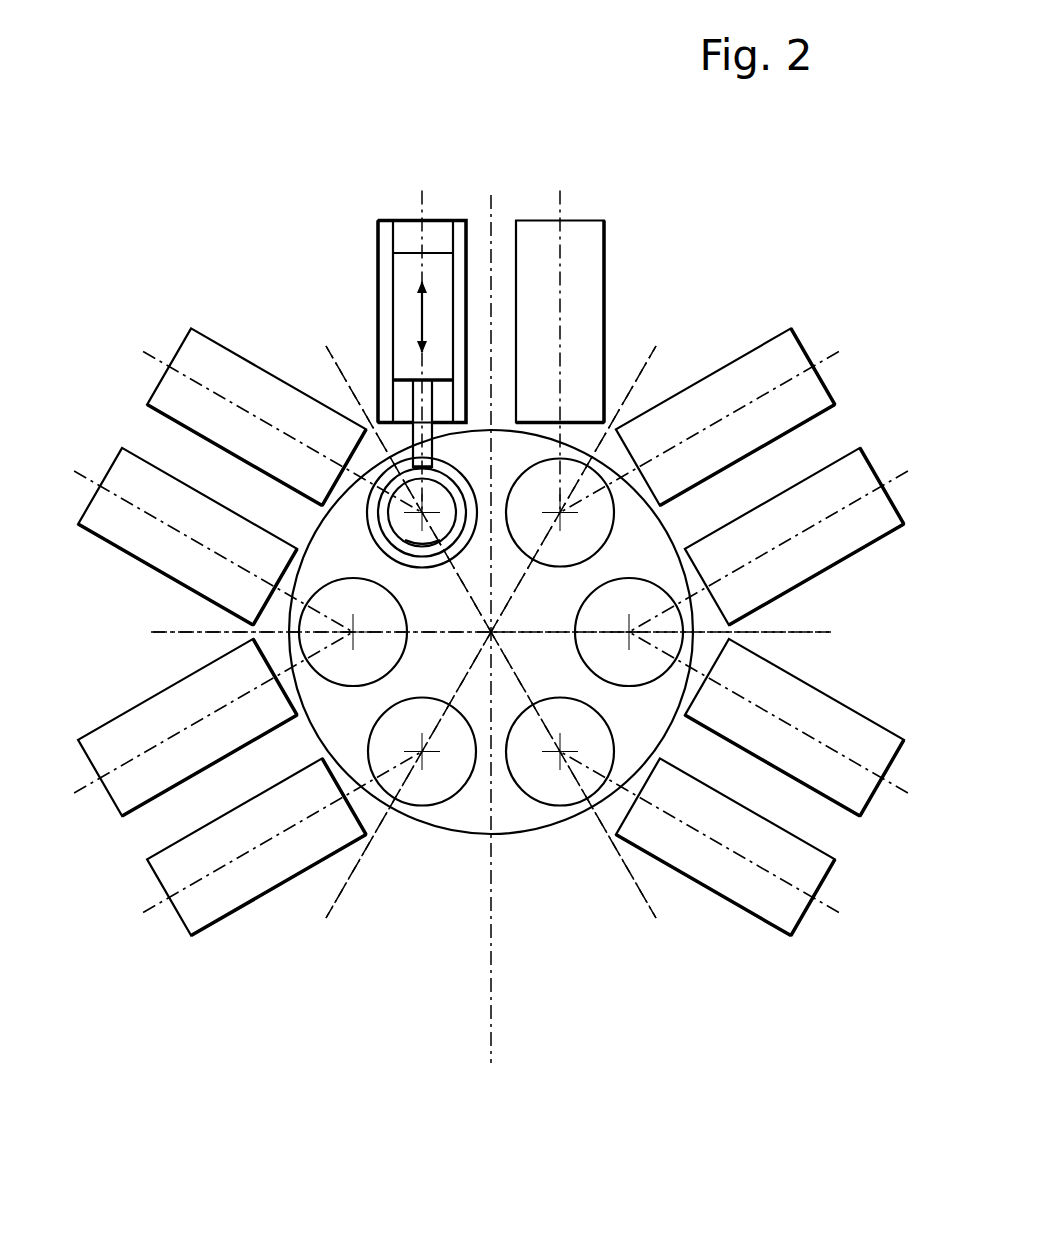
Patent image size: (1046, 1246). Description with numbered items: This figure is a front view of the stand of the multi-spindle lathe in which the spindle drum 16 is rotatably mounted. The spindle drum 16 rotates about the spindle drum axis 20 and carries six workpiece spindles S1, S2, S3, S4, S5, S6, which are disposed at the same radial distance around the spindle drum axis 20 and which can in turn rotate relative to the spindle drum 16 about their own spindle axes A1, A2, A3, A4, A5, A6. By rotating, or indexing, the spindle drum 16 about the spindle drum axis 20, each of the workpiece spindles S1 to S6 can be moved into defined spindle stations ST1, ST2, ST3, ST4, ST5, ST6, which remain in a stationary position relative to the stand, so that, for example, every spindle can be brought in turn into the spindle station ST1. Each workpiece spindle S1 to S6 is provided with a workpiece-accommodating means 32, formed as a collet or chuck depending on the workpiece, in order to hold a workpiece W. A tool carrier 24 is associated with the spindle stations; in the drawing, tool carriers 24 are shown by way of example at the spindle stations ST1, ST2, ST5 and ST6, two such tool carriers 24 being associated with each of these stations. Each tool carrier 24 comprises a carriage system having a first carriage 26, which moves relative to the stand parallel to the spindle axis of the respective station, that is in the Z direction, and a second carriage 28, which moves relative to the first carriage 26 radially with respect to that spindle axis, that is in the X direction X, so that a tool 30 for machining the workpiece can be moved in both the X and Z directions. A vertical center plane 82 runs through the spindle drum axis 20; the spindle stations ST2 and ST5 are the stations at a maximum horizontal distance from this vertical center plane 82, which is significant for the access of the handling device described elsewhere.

The spindle drum 16 is at (511, 830).
The spindle drum axis 20 is at (495, 636).
The tool carrier 24 is at (445, 216).
The first carriage 26 is at (400, 244).
The second carriage 28 is at (400, 290).
The tool 30 is at (434, 462).
The workpiece-accommodating means 32 is at (425, 566).
The vertical center plane 82 is at (493, 1040).
The workpiece W is at (450, 548).
The X direction X is at (422, 322).
The workpiece spindle S1 is at (370, 503).
The workpiece spindle S2 is at (314, 688).
The workpiece spindle S3 is at (444, 808).
The workpiece spindle S4 is at (608, 797).
The workpiece spindle S5 is at (667, 582).
The workpiece spindle S6 is at (538, 458).
The spindle axis A1 is at (422, 512).
The spindle axis A2 is at (353, 632).
The spindle axis A3 is at (422, 752).
The spindle axis A4 is at (560, 752).
The spindle axis A5 is at (630, 633).
The spindle axis A6 is at (562, 512).
The spindle station ST1 is at (326, 346).
The spindle station ST2 is at (151, 632).
The spindle station ST3 is at (336, 918).
The spindle station ST4 is at (646, 918).
The spindle station ST5 is at (831, 632).
The spindle station ST6 is at (656, 346).